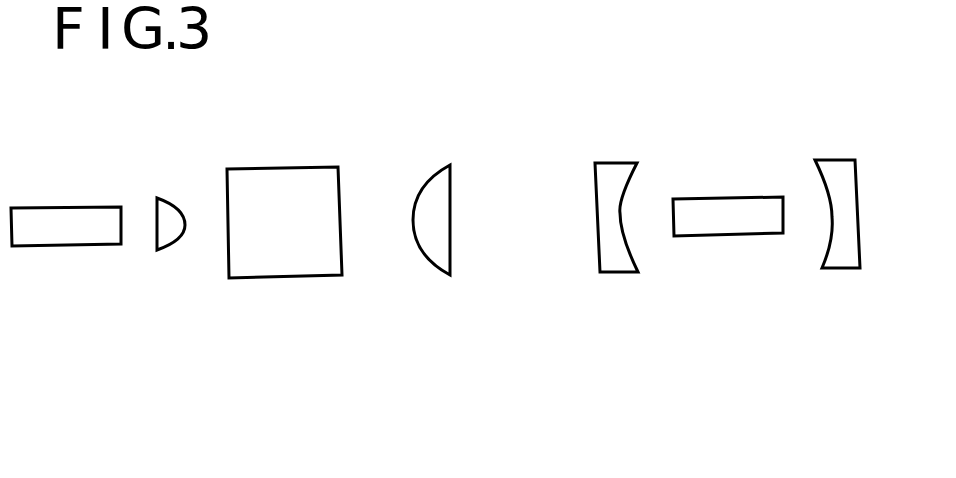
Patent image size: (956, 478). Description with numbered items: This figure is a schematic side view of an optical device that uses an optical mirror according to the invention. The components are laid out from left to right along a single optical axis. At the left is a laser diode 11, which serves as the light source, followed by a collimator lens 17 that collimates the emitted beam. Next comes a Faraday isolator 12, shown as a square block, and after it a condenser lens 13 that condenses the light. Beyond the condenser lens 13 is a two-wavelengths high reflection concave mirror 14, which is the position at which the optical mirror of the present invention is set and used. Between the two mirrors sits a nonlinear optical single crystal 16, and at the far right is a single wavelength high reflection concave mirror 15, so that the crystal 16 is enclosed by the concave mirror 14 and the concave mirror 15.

The laser diode 11 is at (68, 207).
The collimator lens 17 is at (160, 198).
The Faraday isolator 12 is at (287, 167).
The condenser lens 13 is at (444, 160).
The two-wavelengths high reflection concave mirror 14 is at (612, 162).
The nonlinear optical single crystal 16 is at (720, 197).
The single wavelength high reflection concave mirror 15 is at (828, 160).